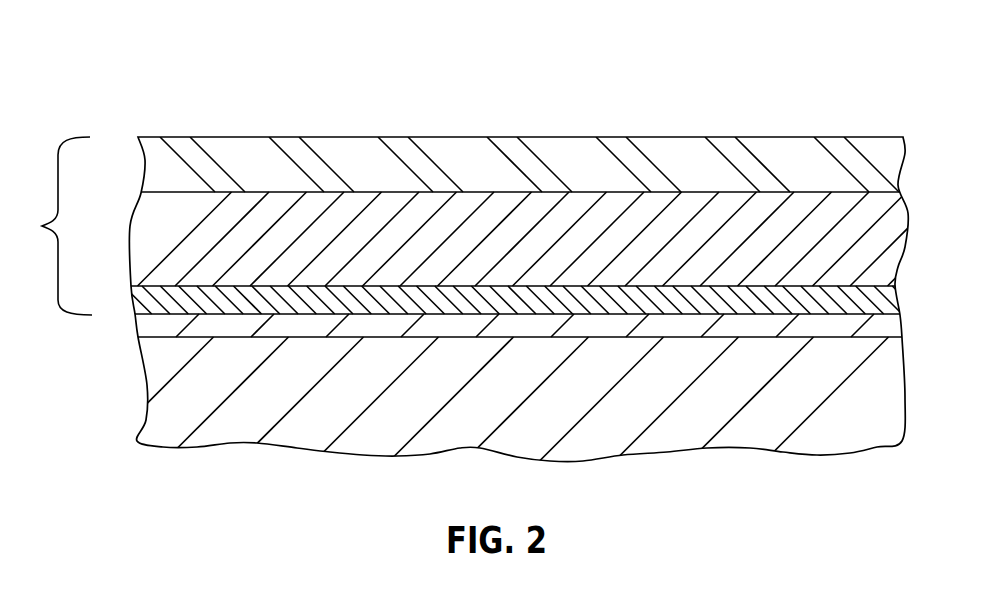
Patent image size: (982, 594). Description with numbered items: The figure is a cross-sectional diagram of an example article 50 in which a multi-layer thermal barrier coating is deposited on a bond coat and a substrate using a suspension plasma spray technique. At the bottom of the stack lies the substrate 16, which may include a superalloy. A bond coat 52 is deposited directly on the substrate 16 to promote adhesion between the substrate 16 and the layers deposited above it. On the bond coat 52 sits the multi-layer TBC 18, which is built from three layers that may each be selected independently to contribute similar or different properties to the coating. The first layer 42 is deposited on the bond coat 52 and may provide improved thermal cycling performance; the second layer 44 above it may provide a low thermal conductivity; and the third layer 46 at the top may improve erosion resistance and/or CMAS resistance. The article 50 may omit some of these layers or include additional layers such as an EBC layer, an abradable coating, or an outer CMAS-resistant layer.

The article 50 is at (67, 58).
The multi-layer TBC 18 is at (49, 226).
The third layer 46 is at (178, 165).
The second layer 44 is at (168, 240).
The first layer 42 is at (168, 302).
The bond coat 52 is at (172, 328).
The substrate 16 is at (182, 390).